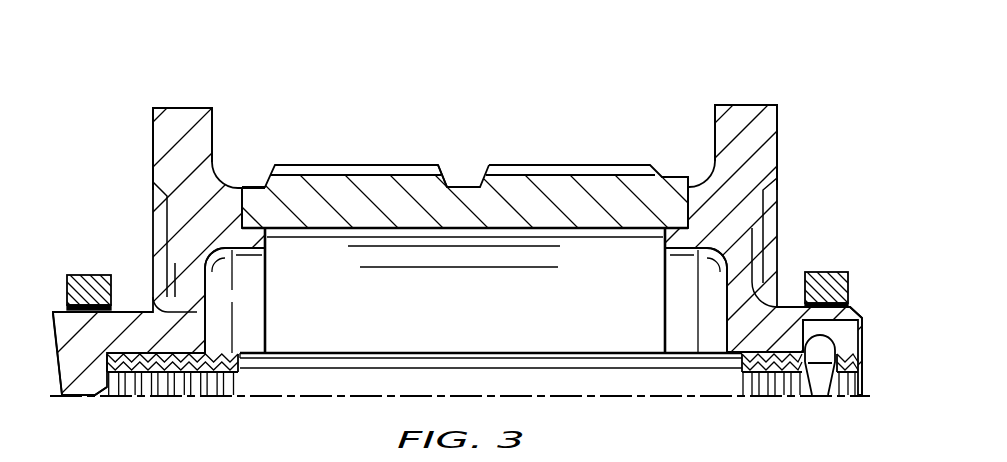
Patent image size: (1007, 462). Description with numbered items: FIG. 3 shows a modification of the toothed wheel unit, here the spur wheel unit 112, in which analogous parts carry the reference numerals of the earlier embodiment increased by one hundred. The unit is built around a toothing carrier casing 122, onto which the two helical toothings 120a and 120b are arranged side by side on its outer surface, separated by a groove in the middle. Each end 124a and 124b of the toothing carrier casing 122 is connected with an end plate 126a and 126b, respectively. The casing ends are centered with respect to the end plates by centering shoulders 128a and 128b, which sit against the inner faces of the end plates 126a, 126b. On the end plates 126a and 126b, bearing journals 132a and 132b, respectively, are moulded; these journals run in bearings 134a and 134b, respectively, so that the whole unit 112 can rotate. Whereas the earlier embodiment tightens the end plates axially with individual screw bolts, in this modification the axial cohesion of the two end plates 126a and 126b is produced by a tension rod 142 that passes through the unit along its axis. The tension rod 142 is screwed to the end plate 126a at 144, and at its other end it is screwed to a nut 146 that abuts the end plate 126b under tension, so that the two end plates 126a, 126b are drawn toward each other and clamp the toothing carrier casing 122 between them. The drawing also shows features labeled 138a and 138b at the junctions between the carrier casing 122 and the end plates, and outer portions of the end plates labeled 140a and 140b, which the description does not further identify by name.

The toothed wheel unit 112 is at (406, 96).
The helical toothing 120a is at (373, 163).
The helical toothing 120b is at (518, 163).
The toothing carrier casing 122 is at (460, 195).
The end of the toothing carrier casing 124a is at (257, 212).
The end of the toothing carrier casing 124b is at (658, 214).
The end plate 126a is at (158, 139).
The end plate 126b is at (770, 158).
The centering shoulder 128a is at (246, 257).
The centering shoulder 128b is at (698, 262).
The bearing journal 132a is at (80, 392).
The bearing journal 132b is at (790, 332).
The bearing 134a is at (84, 272).
The bearing 134b is at (826, 272).
The first shoulder 138a is at (243, 196).
The second shoulder 138b is at (687, 190).
The first mounting flange 140a is at (188, 112).
The second mounting flange 140b is at (752, 106).
The tension rod 142 is at (474, 351).
The screw connection 144 is at (122, 353).
The nut 146 is at (820, 392).